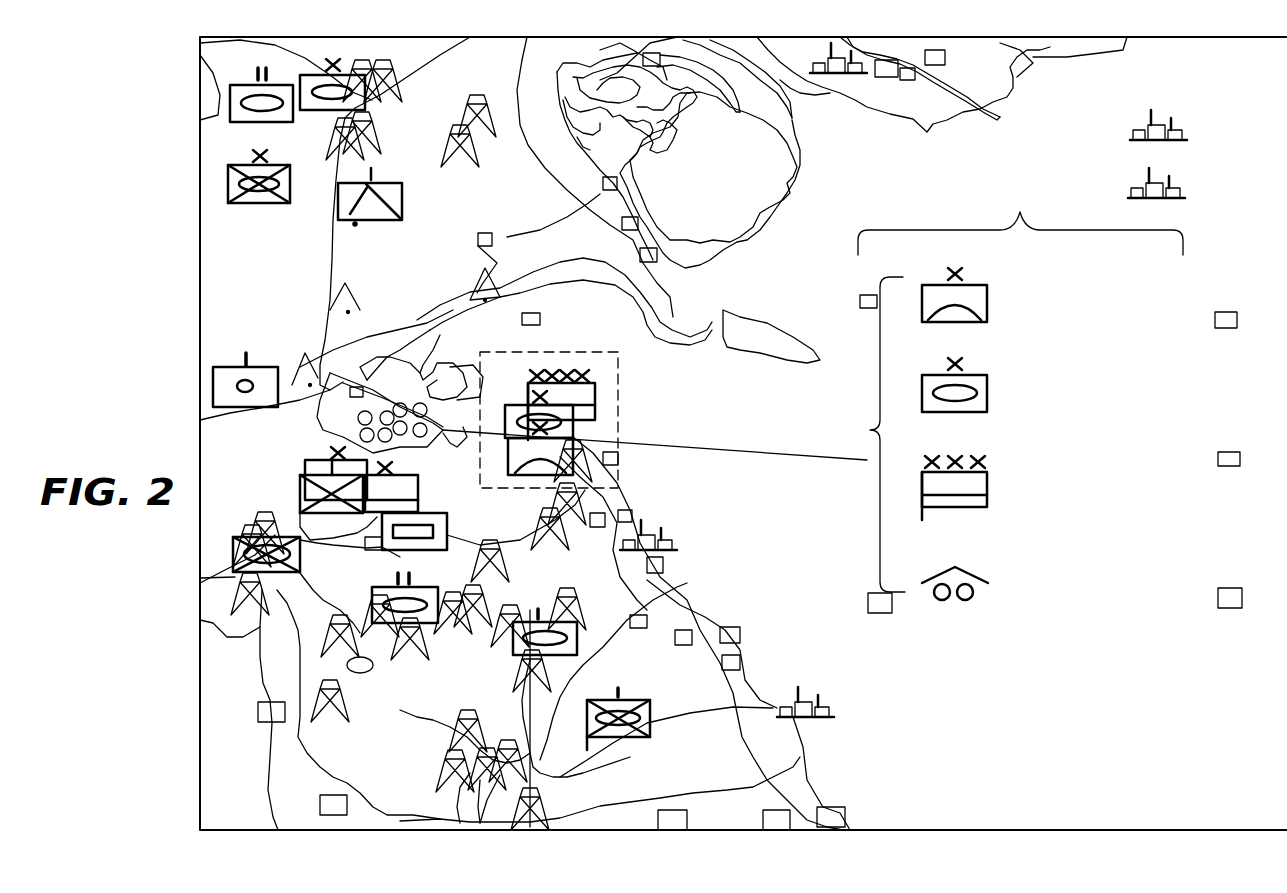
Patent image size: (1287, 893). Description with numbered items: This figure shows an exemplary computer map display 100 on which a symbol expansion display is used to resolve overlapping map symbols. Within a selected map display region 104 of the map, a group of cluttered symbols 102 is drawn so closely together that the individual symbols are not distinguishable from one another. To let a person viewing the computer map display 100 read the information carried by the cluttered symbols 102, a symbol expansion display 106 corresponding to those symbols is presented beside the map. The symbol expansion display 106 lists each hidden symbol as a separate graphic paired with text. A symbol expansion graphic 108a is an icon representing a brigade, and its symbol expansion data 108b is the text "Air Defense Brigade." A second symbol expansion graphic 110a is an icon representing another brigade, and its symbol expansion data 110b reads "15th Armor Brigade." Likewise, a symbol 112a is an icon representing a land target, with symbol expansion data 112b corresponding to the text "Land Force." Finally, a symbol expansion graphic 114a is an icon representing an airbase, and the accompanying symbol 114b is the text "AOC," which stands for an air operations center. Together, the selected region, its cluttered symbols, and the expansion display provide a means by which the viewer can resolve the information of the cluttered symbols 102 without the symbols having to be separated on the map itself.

The computer map display 100 is at (1102, 830).
The cluttered symbols 102 is at (593, 398).
The selected map display region 104 is at (618, 358).
The symbol expansion display 106 is at (1024, 391).
The symbol expansion graphic 108a is at (975, 282).
The symbol expansion data 108b is at (1087, 290).
The symbol expansion graphic 110a is at (975, 373).
The symbol expansion data 110b is at (1083, 383).
The symbol 112a is at (987, 472).
The symbol expansion data 112b is at (1085, 473).
The symbol expansion graphic 114a is at (972, 558).
The symbol 114b is at (1052, 572).